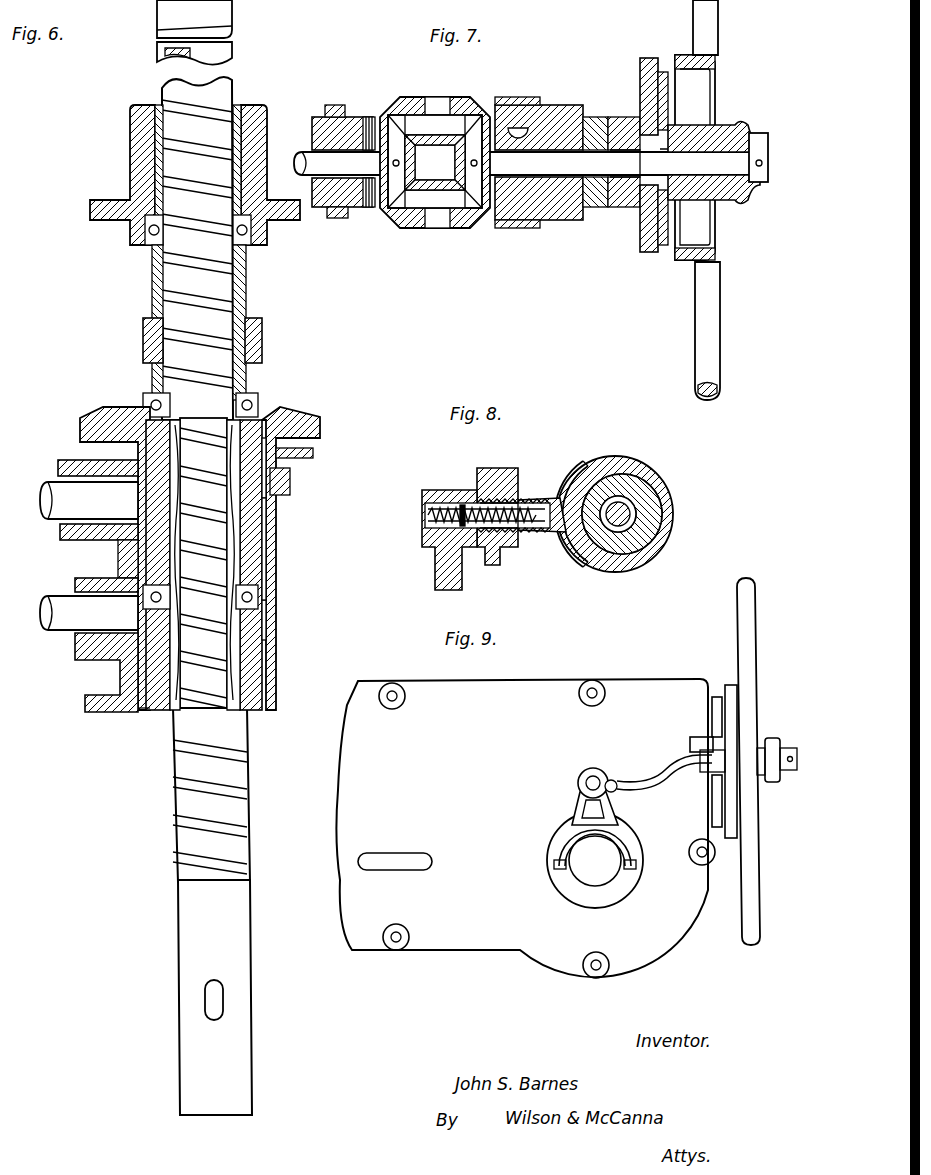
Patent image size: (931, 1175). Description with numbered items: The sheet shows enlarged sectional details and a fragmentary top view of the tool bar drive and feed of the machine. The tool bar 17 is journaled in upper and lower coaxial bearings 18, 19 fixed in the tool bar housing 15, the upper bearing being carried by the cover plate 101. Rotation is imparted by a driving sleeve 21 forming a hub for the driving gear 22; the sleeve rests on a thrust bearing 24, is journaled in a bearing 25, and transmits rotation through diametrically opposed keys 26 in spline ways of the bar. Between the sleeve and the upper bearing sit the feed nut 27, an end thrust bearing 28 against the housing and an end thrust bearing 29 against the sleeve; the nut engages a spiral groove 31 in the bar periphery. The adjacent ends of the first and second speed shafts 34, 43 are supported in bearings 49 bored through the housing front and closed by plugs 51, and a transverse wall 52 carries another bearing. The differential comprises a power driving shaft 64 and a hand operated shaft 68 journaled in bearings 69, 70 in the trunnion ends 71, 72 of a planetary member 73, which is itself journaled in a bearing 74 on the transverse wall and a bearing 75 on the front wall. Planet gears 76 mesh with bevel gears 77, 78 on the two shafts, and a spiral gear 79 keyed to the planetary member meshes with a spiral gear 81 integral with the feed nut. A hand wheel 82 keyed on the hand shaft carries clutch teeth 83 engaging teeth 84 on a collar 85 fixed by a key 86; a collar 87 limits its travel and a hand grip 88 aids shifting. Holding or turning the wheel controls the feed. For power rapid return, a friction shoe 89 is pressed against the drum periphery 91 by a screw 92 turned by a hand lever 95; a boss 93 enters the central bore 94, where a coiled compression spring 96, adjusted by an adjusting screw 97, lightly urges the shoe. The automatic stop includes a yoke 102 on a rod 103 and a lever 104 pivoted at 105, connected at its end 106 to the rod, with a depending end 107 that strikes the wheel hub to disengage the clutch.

In FIG. 6, the tool bar housing 15 is at (278, 665).
In FIG. 8, the tool bar housing 15 is at (500, 560).
In FIG. 6, the tool bar 17 is at (240, 950).
In FIG. 9, the tool bar 17 is at (590, 878).
In FIG. 6, the upper bearing 18 is at (157, 148).
In FIG. 6, the lower bearing 19 is at (168, 668).
In FIG. 6, the driving sleeve 21 is at (255, 495).
In FIG. 6, the driving gear 22 is at (300, 408).
In FIG. 6, the thrust bearing 24 is at (258, 592).
In FIG. 6, the bearing 25 is at (266, 545).
In FIG. 6, the keys 26 is at (175, 445).
In FIG. 6, the feed nut 27 is at (244, 300).
In FIG. 6, the end thrust bearing 28 is at (252, 243).
In FIG. 6, the end thrust bearing 29 is at (258, 400).
In FIG. 6, the spiral groove 31 is at (240, 796).
In FIG. 6, the first speed shaft 34 is at (62, 620).
In FIG. 6, the second speed shaft 43 is at (62, 505).
In FIG. 6, the bearings 49 is at (95, 530).
In FIG. 6, the plugs 51 is at (266, 512).
In FIG. 7, the transverse wall 52 is at (336, 220).
In FIG. 7, the shaft 64 is at (306, 163).
In FIG. 7, the shaft 68 is at (598, 160).
In FIG. 8, the shaft 68 is at (640, 528).
In FIG. 7, the bearing 69 is at (312, 140).
In FIG. 7, the bearing 70 is at (576, 168).
In FIG. 8, the bearing 70 is at (632, 515).
In FIG. 7, the trunnion end 71 is at (365, 128).
In FIG. 7, the trunnion end 72 is at (590, 135).
In FIG. 8, the trunnion end 72 is at (655, 500).
In FIG. 7, the planetary member 73 is at (395, 112).
In FIG. 7, the bearing 74 is at (340, 110).
In FIG. 7, the bearing 75 is at (613, 130).
In FIG. 7, the planet gears 76 is at (443, 128).
In FIG. 7, the bevel gear 77 is at (408, 180).
In FIG. 7, the bevel gear 78 is at (462, 182).
In FIG. 7, the spiral gear 79 is at (508, 105).
In FIG. 6, the spiral gear 81 is at (262, 333).
In FIG. 7, the hand wheel 82 is at (720, 286).
In FIG. 9, the hand wheel 82 is at (755, 650).
In FIG. 7, the clutch teeth 83 is at (680, 200).
In FIG. 7, the clutch teeth 84 is at (678, 120).
In FIG. 7, the collar 85 is at (645, 200).
In FIG. 7, the key 86 is at (645, 100).
In FIG. 7, the collar 87 is at (762, 182).
In FIG. 9, the collar 87 is at (790, 772).
In FIG. 7, the hand grip 88 is at (740, 125).
In FIG. 8, the friction shoe 89 is at (580, 462).
In FIG. 8, the drum periphery 91 is at (660, 475).
In FIG. 8, the screw 92 is at (528, 500).
In FIG. 8, the boss 93 is at (548, 500).
In FIG. 8, the central bore 94 is at (487, 500).
In FIG. 8, the hand lever 95 is at (435, 573).
In FIG. 8, the coiled compression spring 96 is at (462, 503).
In FIG. 8, the adjusting screw 97 is at (428, 515).
In FIG. 6, the cover plate 101 is at (100, 200).
In FIG. 9, the cover plate 101 is at (454, 935).
In FIG. 9, the yoke 102 is at (558, 840).
In FIG. 9, the rod 103 is at (596, 778).
In FIG. 9, the lever 104 is at (655, 780).
In FIG. 9, the pivot 105 is at (700, 737).
In FIG. 9, the lever end 106 is at (614, 784).
In FIG. 9, the depending end 107 is at (728, 760).